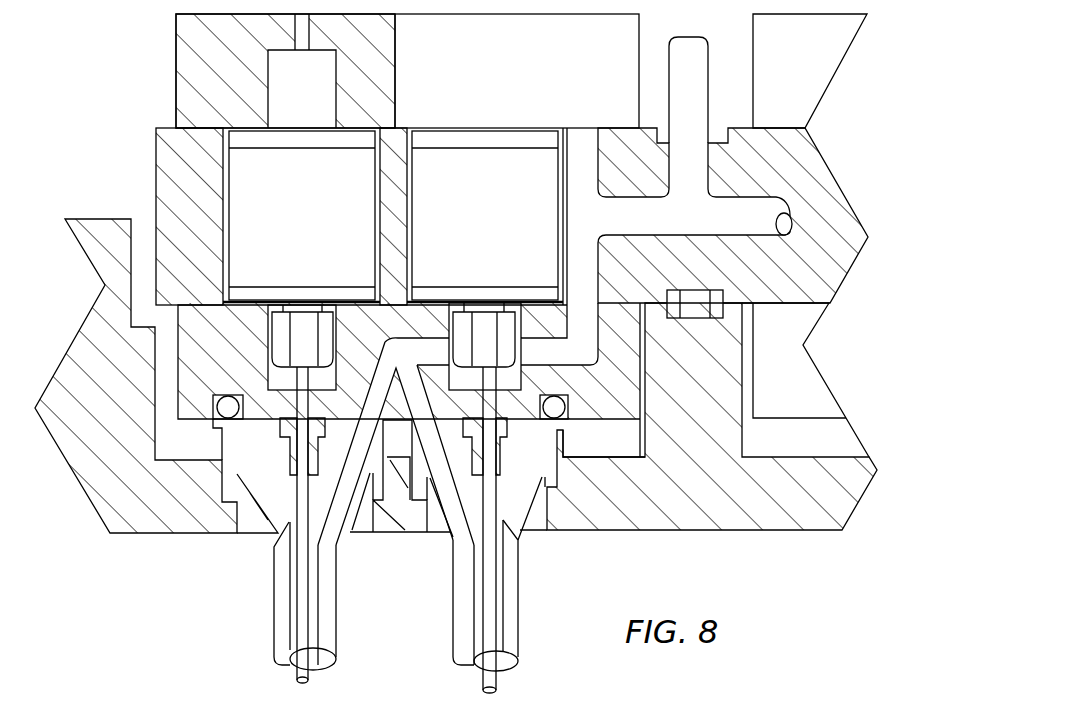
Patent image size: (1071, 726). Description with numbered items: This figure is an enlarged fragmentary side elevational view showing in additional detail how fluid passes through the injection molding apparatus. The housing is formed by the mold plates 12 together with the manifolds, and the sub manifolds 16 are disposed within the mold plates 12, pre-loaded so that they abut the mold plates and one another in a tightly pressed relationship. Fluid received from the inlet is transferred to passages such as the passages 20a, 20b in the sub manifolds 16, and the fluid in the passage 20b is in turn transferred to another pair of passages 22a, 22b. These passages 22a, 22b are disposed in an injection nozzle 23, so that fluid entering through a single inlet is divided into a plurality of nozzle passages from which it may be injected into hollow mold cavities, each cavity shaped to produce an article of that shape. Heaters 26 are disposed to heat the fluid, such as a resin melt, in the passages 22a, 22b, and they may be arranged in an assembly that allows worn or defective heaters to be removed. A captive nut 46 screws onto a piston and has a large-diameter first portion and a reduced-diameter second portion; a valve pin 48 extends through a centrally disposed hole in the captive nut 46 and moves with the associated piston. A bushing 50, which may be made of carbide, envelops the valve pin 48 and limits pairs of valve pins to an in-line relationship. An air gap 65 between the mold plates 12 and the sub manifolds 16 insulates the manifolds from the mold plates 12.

The mold plates 12 is at (732, 516).
The sub manifolds 16 is at (185, 397).
The passage 20a is at (581, 137).
The passage 20b is at (548, 306).
The passage 22a is at (292, 632).
The passage 22b is at (510, 667).
The injection nozzle 23 is at (278, 534).
The heaters 26 is at (215, 404).
The captive nut 46 is at (302, 323).
The valve pin 48 is at (483, 678).
The bushing 50 is at (477, 462).
The air gap 65 is at (593, 446).